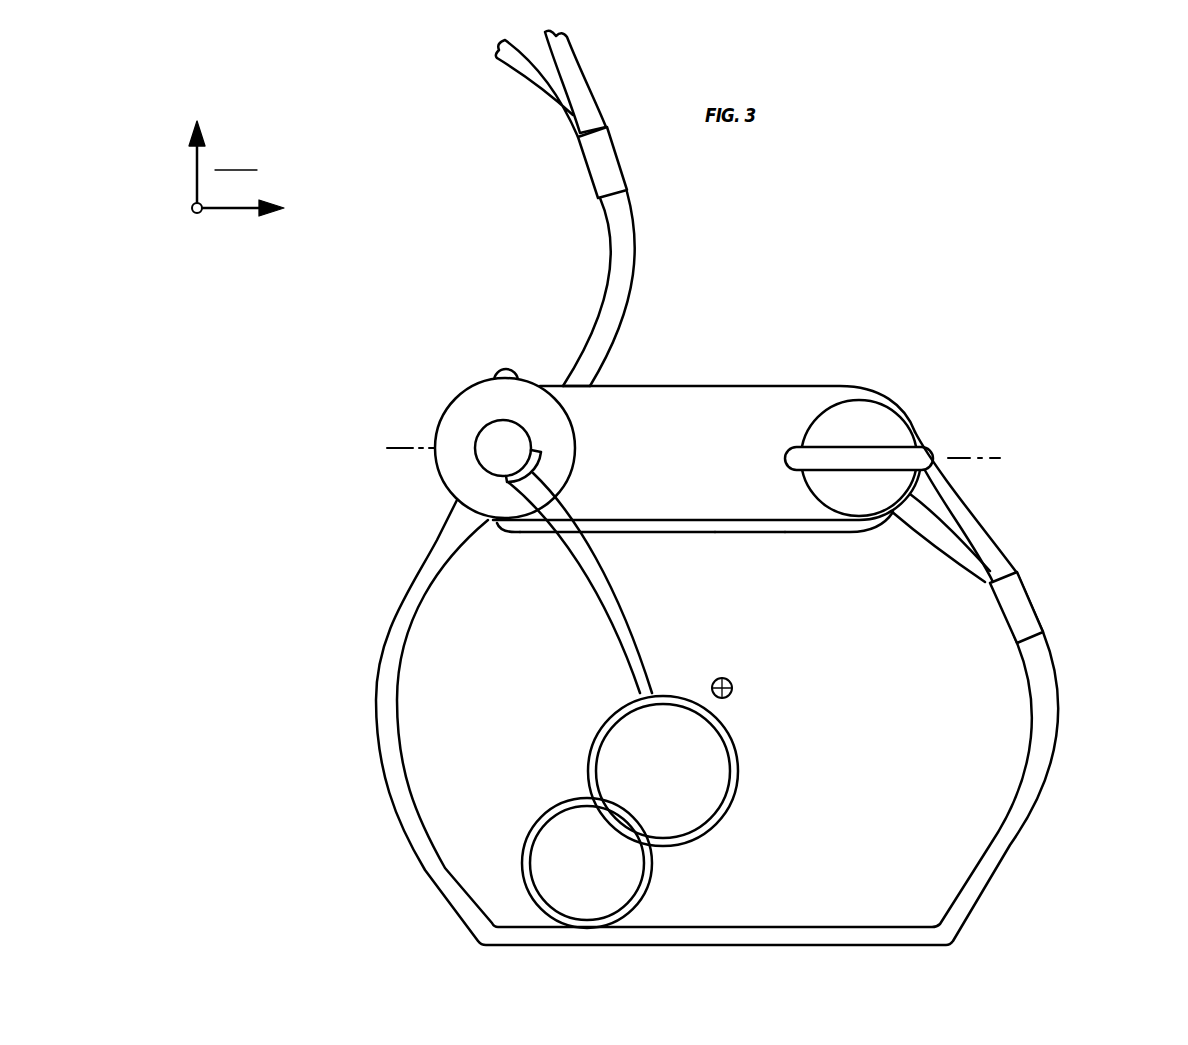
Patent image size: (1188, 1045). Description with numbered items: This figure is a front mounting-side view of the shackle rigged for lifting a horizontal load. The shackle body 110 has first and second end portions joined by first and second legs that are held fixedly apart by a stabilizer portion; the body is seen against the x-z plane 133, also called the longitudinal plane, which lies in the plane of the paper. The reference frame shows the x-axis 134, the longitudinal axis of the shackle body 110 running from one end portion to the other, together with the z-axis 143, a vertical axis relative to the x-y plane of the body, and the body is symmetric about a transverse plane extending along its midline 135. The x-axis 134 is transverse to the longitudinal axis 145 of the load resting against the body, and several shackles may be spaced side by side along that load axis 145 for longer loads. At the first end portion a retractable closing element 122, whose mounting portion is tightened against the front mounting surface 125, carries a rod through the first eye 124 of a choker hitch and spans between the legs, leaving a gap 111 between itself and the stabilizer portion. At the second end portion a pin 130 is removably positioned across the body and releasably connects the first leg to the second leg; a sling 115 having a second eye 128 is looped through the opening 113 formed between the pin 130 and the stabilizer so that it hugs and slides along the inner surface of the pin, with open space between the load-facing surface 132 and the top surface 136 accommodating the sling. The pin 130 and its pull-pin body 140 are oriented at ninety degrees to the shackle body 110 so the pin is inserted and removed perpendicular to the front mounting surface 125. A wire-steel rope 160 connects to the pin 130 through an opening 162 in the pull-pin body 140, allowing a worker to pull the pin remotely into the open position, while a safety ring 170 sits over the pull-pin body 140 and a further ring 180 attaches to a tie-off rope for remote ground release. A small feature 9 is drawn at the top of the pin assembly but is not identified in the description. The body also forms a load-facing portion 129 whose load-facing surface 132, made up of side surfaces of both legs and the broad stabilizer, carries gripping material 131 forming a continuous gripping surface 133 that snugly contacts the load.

The protrusion 9 is at (508, 367).
The shackle body 110 is at (707, 414).
The gap 111 is at (892, 510).
The opening 113 is at (577, 385).
The sling 115 is at (1000, 565).
The retractable closing element 122 is at (867, 428).
The first eye 124 is at (967, 495).
The front mounting surface 125 is at (765, 410).
The second eye 128 is at (552, 88).
The load-facing portion 129 is at (670, 520).
The pin 130 is at (493, 430).
The gripping material 131 is at (820, 532).
The load-facing surface 132 is at (752, 532).
The gripping surface 133 is at (685, 532).
The longitudinal axis 134 is at (232, 205).
The midline 135 is at (407, 448).
The top surface 136 is at (623, 385).
The pull-pin body 140 is at (462, 492).
The z-axis 143 is at (197, 160).
The longitudinal axis of the load 145 is at (197, 218).
The wire-steel rope 160 is at (609, 606).
The opening 162 is at (507, 482).
The safety ring 170 is at (593, 735).
The ring 180 is at (527, 850).